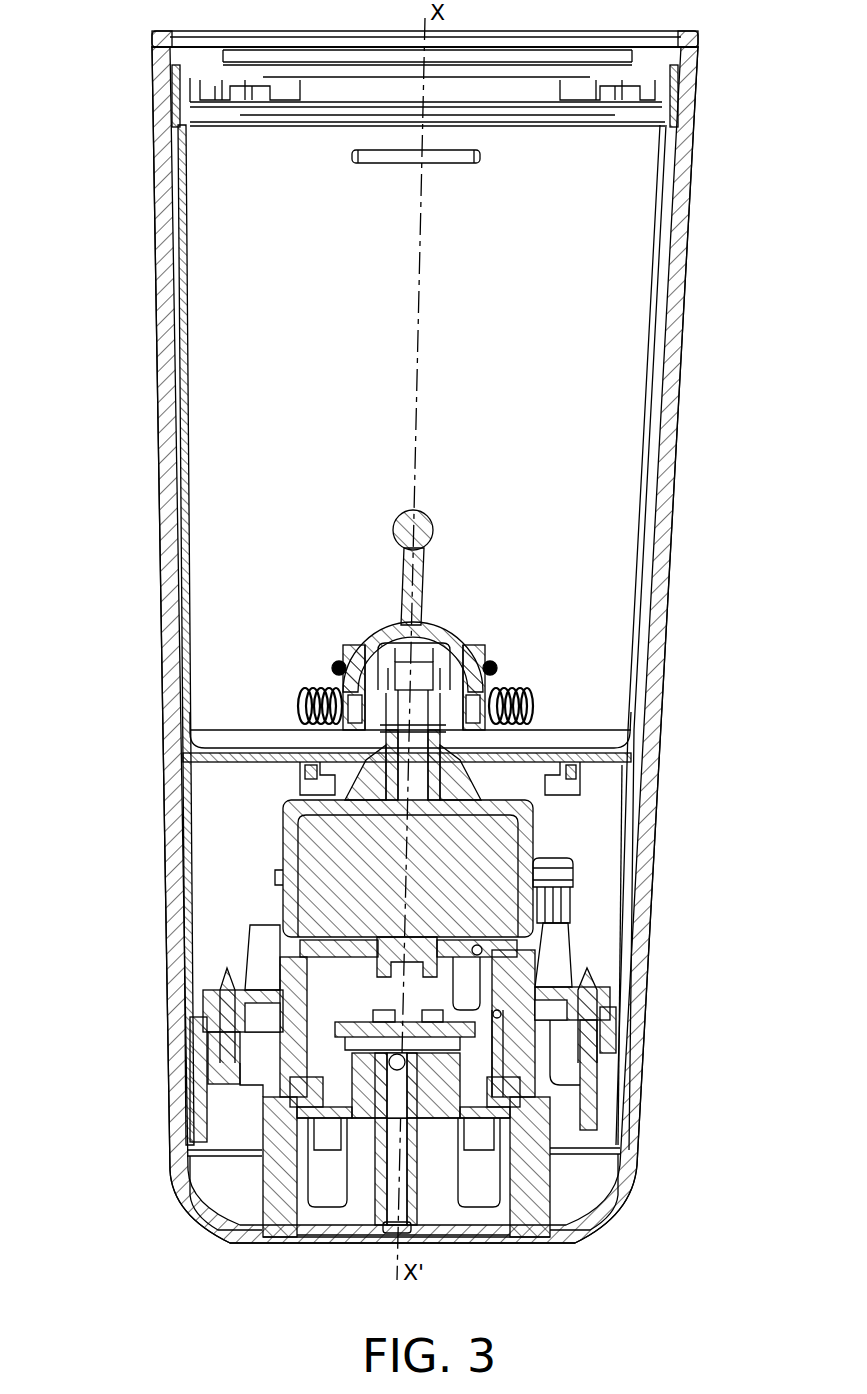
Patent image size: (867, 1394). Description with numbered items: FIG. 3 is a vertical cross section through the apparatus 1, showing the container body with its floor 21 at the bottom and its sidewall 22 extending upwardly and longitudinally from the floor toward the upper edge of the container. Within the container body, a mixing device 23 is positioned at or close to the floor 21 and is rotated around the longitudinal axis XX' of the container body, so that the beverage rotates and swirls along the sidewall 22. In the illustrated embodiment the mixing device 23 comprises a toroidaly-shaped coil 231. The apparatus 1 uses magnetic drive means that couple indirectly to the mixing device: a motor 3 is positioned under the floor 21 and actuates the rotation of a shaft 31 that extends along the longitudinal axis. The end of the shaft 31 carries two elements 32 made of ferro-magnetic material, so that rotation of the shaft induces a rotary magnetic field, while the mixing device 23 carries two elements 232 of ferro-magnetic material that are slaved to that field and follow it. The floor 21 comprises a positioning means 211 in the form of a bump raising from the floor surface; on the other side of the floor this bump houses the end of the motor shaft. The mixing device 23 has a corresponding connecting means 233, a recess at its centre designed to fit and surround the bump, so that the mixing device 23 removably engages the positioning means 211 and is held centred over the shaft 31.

The apparatus 1 is at (98, 150).
The sidewall 22 is at (665, 292).
The floor 21 is at (205, 708).
The mixing device 23 is at (447, 513).
The connecting means 233 is at (385, 648).
The positioning means 211 is at (425, 665).
The ferro-magnetic elements 32 is at (455, 690).
The shaft 31 is at (470, 790).
The ferro-magnetic elements 232 is at (335, 674).
The toroidaly-shaped coil 231 is at (535, 705).
The motor 3 is at (520, 828).